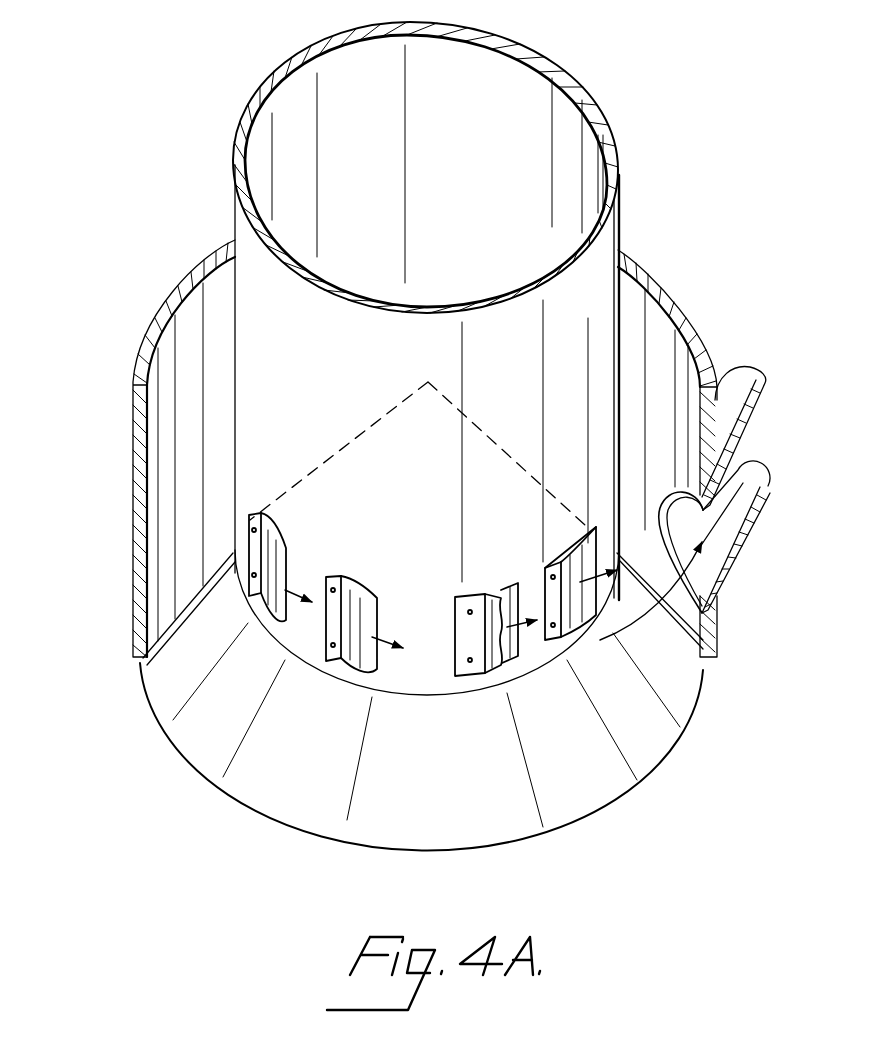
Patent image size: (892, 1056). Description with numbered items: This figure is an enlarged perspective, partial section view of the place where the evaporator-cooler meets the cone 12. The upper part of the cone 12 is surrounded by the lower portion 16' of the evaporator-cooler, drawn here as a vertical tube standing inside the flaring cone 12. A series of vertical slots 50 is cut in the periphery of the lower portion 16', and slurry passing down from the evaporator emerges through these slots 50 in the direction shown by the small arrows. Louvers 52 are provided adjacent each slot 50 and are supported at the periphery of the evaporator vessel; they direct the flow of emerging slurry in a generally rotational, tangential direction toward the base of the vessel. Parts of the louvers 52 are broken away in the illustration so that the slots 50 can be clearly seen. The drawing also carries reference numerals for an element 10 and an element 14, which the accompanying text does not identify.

The housing shell 10 is at (133, 470).
The cone 12 is at (193, 585).
The inlet pipe 14 is at (743, 392).
The lower portion of evaporator-cooler 16' is at (457, 358).
The vertical slots 50 is at (366, 592).
The louvers 52 is at (353, 670).